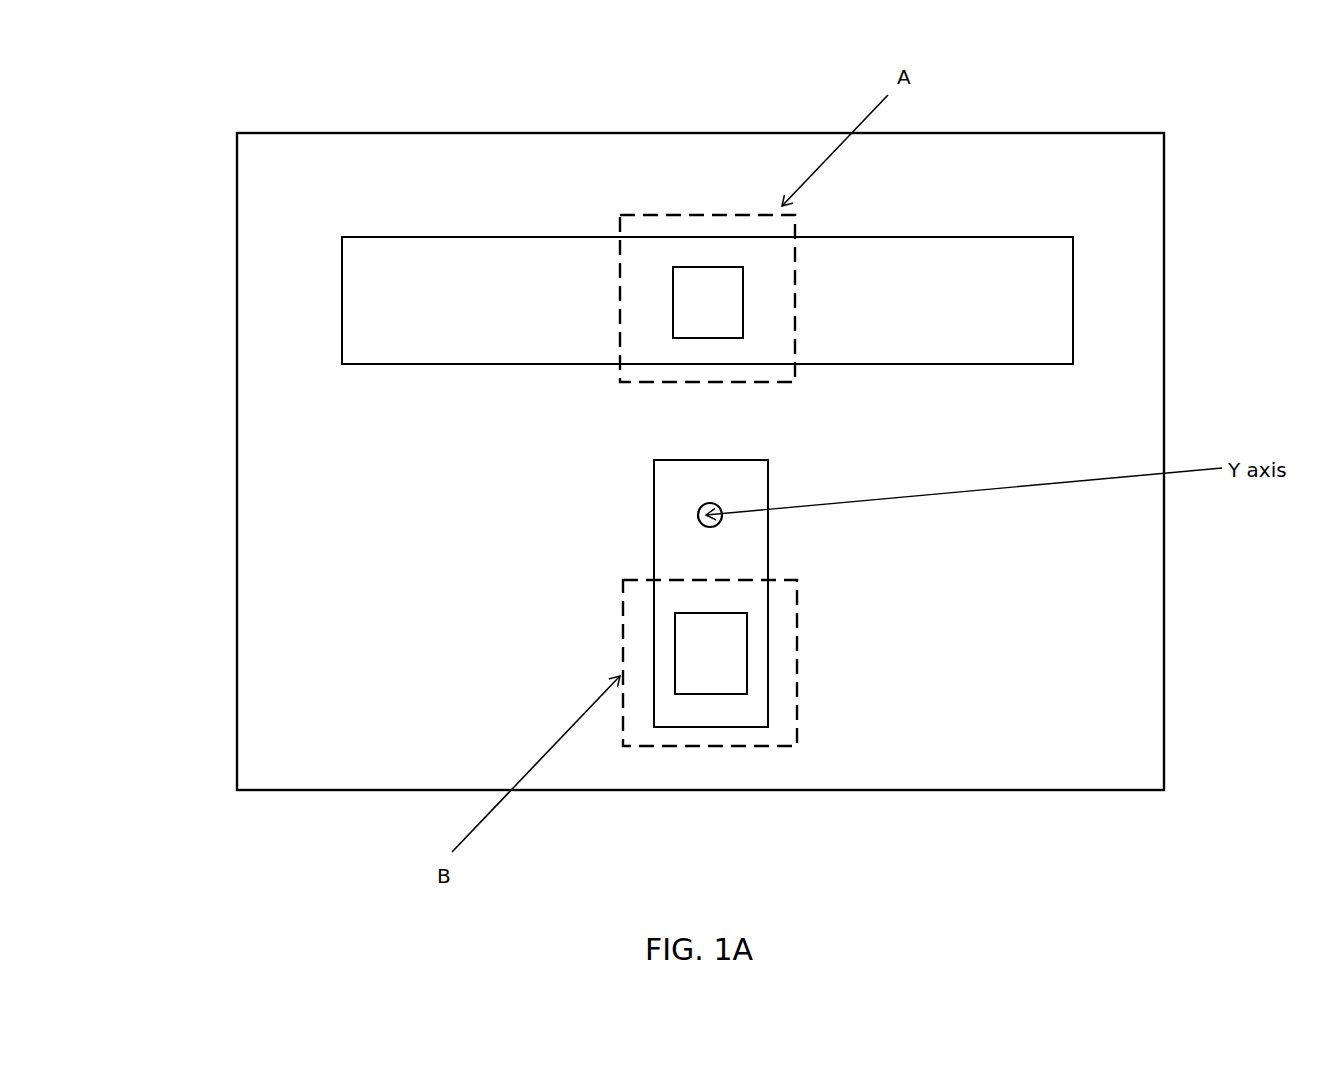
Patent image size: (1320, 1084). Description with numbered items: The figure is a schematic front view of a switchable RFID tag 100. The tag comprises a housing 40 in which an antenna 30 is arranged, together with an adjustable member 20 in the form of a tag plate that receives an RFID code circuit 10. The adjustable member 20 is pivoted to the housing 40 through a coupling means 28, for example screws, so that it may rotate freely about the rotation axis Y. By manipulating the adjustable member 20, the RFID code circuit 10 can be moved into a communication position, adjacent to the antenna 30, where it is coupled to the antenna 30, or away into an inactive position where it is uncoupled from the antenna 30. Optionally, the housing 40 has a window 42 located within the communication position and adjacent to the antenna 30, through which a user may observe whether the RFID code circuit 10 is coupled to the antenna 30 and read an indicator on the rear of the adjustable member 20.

The switchable RFID tag 100 is at (1165, 82).
The housing 40 is at (313, 436).
The antenna 30 is at (968, 293).
The window 42 is at (699, 306).
The adjustable member 20 is at (742, 543).
The coupling means 28 is at (717, 527).
The RFID code circuit 10 is at (713, 656).